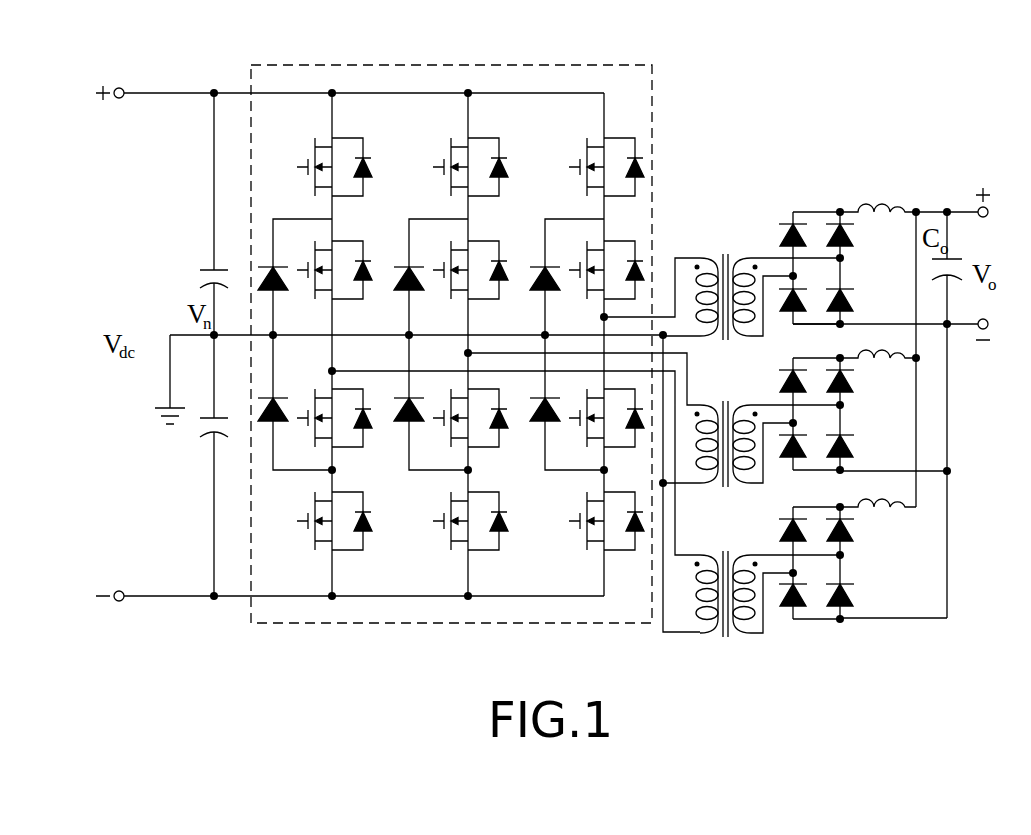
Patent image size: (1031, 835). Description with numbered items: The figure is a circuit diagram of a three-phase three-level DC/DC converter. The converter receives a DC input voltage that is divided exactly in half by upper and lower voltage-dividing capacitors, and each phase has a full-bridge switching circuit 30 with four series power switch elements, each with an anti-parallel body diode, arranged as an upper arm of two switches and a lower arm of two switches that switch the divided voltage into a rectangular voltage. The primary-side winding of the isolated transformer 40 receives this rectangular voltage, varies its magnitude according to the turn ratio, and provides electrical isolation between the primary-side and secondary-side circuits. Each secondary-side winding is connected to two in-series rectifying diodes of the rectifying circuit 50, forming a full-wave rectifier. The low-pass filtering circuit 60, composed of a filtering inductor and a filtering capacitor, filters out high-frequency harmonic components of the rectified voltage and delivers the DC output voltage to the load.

The full-bridge switching circuit 30 is at (622, 68).
The isolated transformer 40 is at (727, 247).
The rectifying circuit 50 is at (812, 209).
The low-pass filtering circuit 60 is at (881, 204).